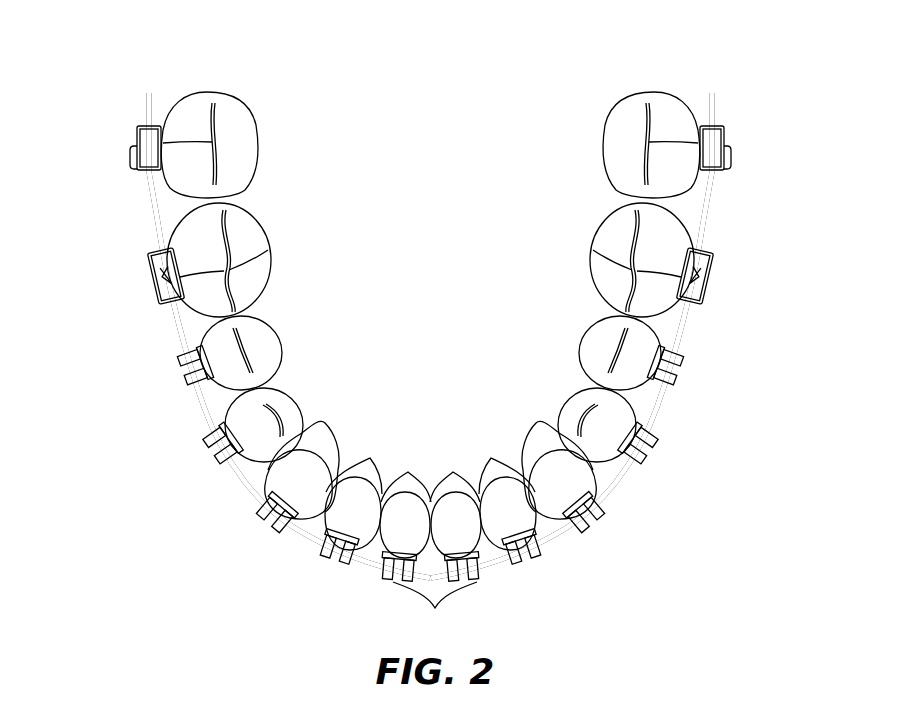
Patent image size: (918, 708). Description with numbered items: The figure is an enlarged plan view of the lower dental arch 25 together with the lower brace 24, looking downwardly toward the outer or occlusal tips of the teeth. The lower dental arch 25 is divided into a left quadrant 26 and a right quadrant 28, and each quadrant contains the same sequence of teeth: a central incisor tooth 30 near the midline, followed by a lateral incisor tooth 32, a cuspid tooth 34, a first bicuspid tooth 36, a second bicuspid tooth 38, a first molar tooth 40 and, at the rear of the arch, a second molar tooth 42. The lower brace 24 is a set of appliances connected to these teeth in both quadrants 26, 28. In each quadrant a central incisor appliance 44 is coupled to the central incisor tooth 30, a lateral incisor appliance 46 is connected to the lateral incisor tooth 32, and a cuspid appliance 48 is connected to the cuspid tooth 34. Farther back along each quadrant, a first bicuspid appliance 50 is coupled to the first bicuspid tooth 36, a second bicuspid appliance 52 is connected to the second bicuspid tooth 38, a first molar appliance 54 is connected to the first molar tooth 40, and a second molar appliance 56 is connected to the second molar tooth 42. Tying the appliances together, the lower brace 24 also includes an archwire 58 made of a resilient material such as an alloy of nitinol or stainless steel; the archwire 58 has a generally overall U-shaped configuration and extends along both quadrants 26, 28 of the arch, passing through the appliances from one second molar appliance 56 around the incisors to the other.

The lower brace 24 is at (784, 194).
The lower dental arch 25 is at (657, 41).
The left quadrant 26 is at (746, 339).
The right quadrant 28 is at (115, 340).
The central incisor tooth 30 is at (447, 480).
The lateral incisor tooth 32 is at (373, 462).
The cuspid tooth 34 is at (328, 440).
The first bicuspid tooth 36 is at (287, 408).
The second bicuspid tooth 38 is at (271, 337).
The first molar tooth 40 is at (256, 236).
The second molar tooth 42 is at (247, 135).
The central incisor appliance 44 is at (435, 609).
The lateral incisor appliance 46 is at (323, 573).
The cuspid appliance 48 is at (257, 520).
The first bicuspid appliance 50 is at (207, 462).
The second bicuspid appliance 52 is at (174, 362).
The first molar appliance 54 is at (158, 263).
The second molar appliance 56 is at (139, 137).
The archwire 58 is at (192, 405).